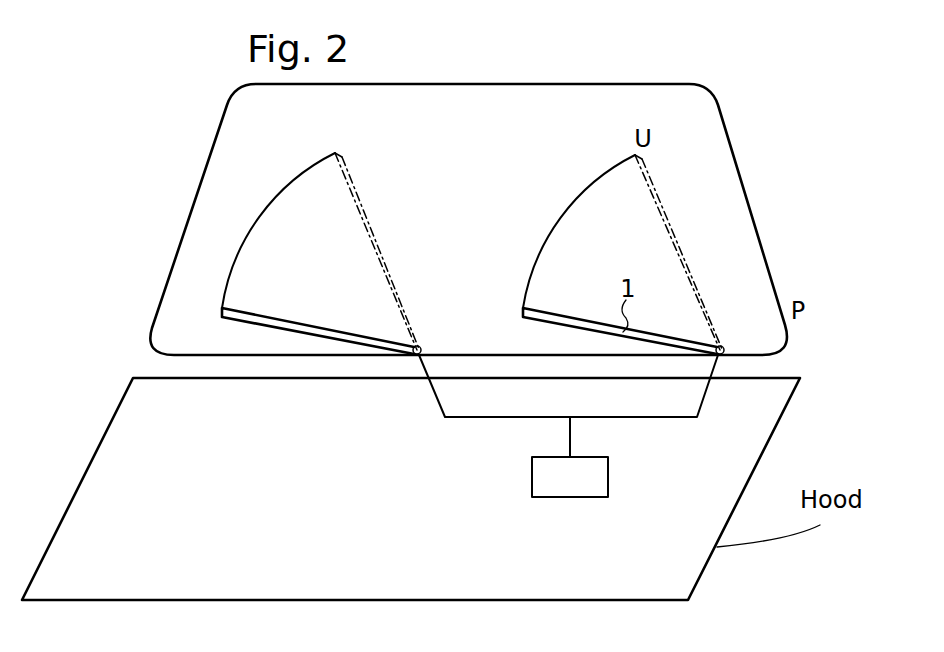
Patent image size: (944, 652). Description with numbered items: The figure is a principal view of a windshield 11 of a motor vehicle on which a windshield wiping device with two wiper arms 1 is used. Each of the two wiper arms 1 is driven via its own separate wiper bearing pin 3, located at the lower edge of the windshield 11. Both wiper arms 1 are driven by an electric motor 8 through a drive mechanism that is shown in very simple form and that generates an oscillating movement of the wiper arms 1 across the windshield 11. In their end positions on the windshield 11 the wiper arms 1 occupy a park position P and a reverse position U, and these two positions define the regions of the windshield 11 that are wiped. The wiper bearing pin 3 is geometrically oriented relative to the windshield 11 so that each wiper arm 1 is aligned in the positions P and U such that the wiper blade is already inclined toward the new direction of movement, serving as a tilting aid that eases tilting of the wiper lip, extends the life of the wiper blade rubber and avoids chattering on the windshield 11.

The wiper arm 1 is at (323, 330).
The wiper bearing pin 3 is at (413, 356).
The electric motor 8 is at (608, 475).
The windshield 11 is at (707, 137).